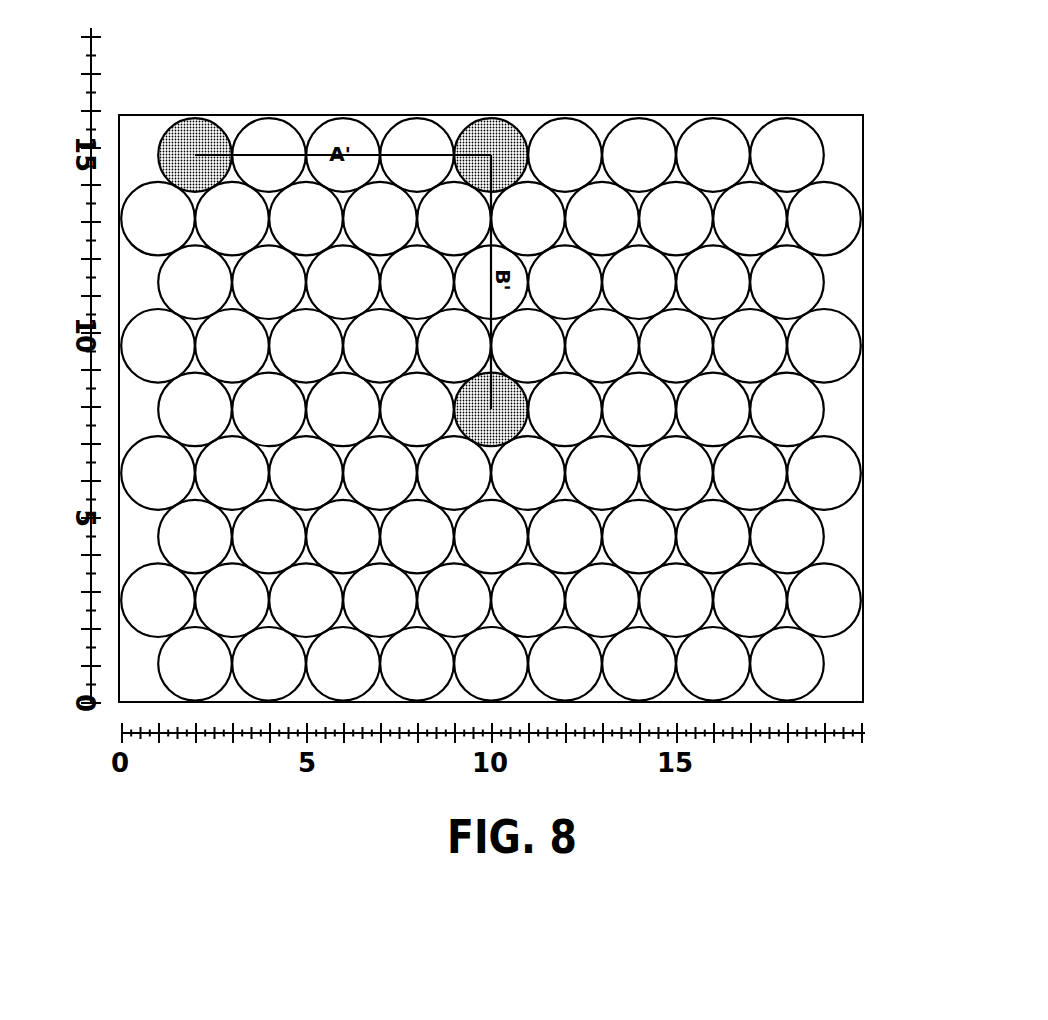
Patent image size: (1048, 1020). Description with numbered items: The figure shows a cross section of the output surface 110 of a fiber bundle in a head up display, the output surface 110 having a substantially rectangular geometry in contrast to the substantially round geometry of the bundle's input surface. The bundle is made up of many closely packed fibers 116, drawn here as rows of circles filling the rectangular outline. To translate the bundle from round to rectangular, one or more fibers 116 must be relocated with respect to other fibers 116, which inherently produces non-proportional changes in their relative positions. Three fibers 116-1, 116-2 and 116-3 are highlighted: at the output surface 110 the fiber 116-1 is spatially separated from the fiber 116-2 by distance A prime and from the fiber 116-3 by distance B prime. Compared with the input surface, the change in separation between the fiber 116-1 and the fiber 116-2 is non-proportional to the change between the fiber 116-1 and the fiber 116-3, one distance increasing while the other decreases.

The output surface 110 is at (782, 63).
The fibers 116 is at (803, 282).
The fiber 116-1 is at (491, 155).
The fiber 116-2 is at (195, 155).
The fiber 116-3 is at (491, 410).